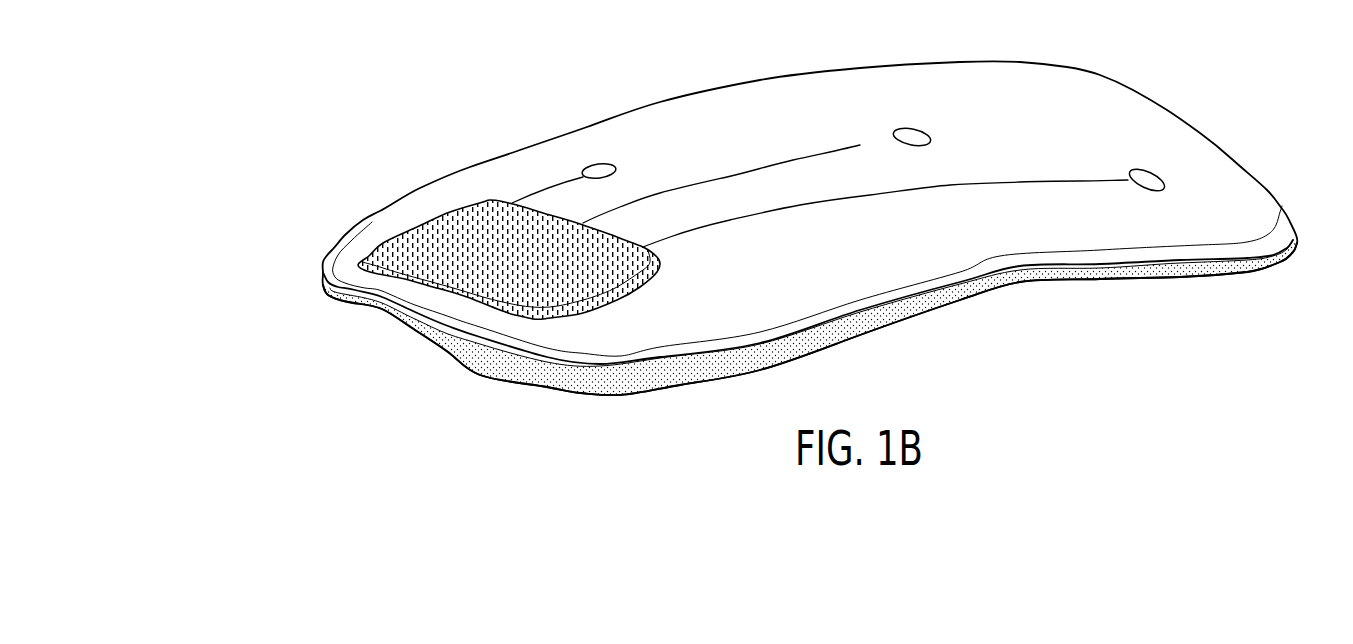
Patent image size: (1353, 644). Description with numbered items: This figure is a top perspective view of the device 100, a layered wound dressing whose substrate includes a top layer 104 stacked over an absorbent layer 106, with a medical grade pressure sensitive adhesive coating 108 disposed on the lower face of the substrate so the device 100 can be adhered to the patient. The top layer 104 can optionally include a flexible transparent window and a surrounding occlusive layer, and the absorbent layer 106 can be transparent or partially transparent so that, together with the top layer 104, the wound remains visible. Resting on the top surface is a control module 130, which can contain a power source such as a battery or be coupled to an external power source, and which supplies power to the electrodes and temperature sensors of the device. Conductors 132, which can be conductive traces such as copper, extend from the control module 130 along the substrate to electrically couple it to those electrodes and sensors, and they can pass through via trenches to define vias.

The device 100 is at (441, 90).
The top layer 104 is at (1200, 235).
The absorbent layer 106 is at (847, 313).
The pressure sensitive adhesive coating 108 is at (777, 353).
The control module 130 is at (440, 188).
The conductors 132 is at (553, 190).